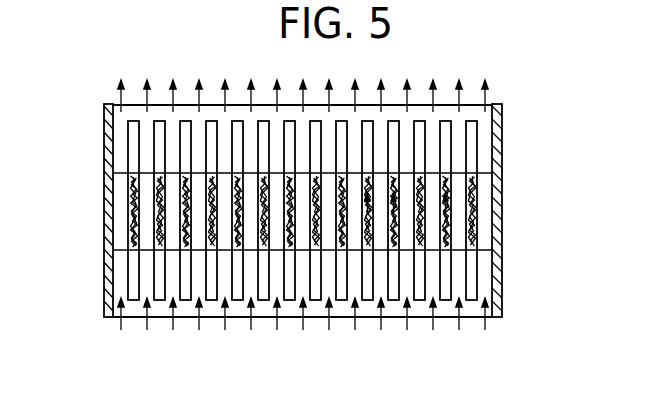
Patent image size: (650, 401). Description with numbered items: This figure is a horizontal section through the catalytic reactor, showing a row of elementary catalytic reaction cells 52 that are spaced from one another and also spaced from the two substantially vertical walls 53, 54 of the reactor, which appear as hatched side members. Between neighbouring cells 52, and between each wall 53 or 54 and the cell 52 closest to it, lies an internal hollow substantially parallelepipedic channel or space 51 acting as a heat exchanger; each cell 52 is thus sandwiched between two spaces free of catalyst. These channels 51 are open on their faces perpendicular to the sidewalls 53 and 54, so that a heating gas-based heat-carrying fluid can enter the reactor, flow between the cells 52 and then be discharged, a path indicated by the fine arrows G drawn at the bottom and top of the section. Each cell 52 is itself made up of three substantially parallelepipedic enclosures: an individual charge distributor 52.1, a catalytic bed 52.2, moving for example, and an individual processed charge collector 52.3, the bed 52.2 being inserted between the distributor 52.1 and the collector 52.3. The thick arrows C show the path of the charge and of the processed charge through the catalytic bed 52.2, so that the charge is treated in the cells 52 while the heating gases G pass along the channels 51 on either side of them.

The internal hollow parallelepipedic channel 51 is at (329, 302).
The elementary catalytic reaction cell 52 is at (289, 302).
The individual charge distributor 52.1 is at (479, 278).
The catalytic bed 52.2 is at (479, 221).
The individual processed charge collector 52.3 is at (479, 153).
The substantially vertical wall 53 is at (503, 130).
The substantially vertical wall 54 is at (104, 126).
The thick arrows showing path of the charge C is at (390, 186).
The fine arrows showing path of the heating gases G is at (251, 90).